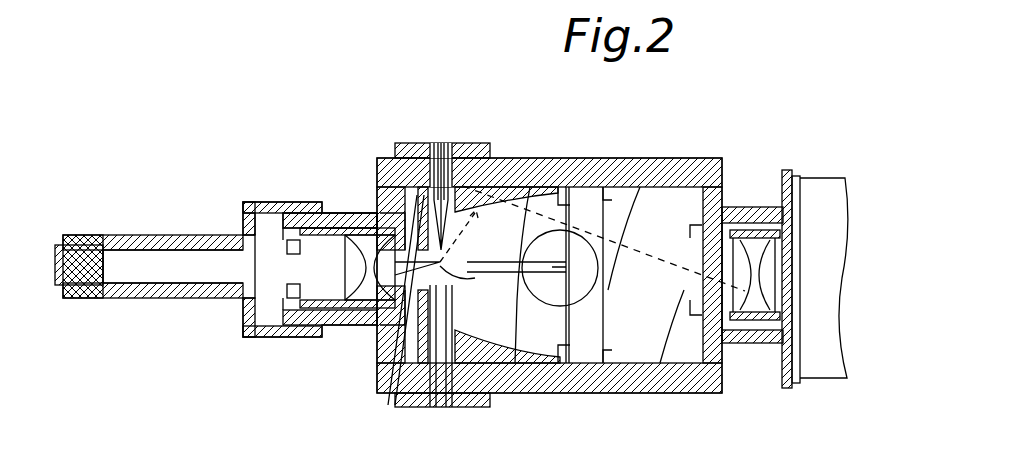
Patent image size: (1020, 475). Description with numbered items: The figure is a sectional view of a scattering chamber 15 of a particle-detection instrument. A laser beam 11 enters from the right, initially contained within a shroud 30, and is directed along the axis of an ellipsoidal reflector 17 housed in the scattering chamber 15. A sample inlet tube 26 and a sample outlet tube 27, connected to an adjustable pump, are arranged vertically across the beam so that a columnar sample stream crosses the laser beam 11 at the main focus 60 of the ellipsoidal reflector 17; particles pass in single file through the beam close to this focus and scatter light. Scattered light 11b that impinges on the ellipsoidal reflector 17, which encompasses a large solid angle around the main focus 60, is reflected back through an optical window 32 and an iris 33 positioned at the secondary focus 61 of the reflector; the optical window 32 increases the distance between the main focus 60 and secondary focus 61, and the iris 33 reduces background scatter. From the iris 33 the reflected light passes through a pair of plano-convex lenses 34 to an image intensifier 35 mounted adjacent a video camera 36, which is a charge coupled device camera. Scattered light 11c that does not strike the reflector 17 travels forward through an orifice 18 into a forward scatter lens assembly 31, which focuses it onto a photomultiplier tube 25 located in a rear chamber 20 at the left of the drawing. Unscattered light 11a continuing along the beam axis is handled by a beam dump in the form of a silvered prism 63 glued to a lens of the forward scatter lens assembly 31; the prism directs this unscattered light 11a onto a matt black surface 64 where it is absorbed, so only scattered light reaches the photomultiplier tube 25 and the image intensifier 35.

The laser beam 11 is at (558, 180).
The unscattered light 11a is at (497, 302).
The scattered light 11b is at (605, 192).
The scattered light 11c is at (243, 236).
The scattering chamber 15 is at (666, 215).
The ellipsoidal reflector 17 is at (488, 172).
The orifice 18 is at (396, 336).
The rear chamber 20 is at (305, 240).
The photomultiplier tube 25 is at (181, 265).
The sample inlet tube 26 is at (457, 168).
The sample outlet tube 27 is at (428, 355).
The shroud 30 is at (514, 390).
The forward scatter lens assembly 31 is at (301, 330).
The optical window 32 is at (578, 387).
The iris 33 is at (722, 200).
The pair of plano-convex lenses 34 is at (793, 243).
The image intensifier 35 is at (763, 345).
The video camera 36 is at (815, 335).
The main focus 60 is at (378, 200).
The secondary focus 61 is at (663, 393).
The silvered prism 63 is at (352, 300).
The matt black surface 64 is at (392, 378).